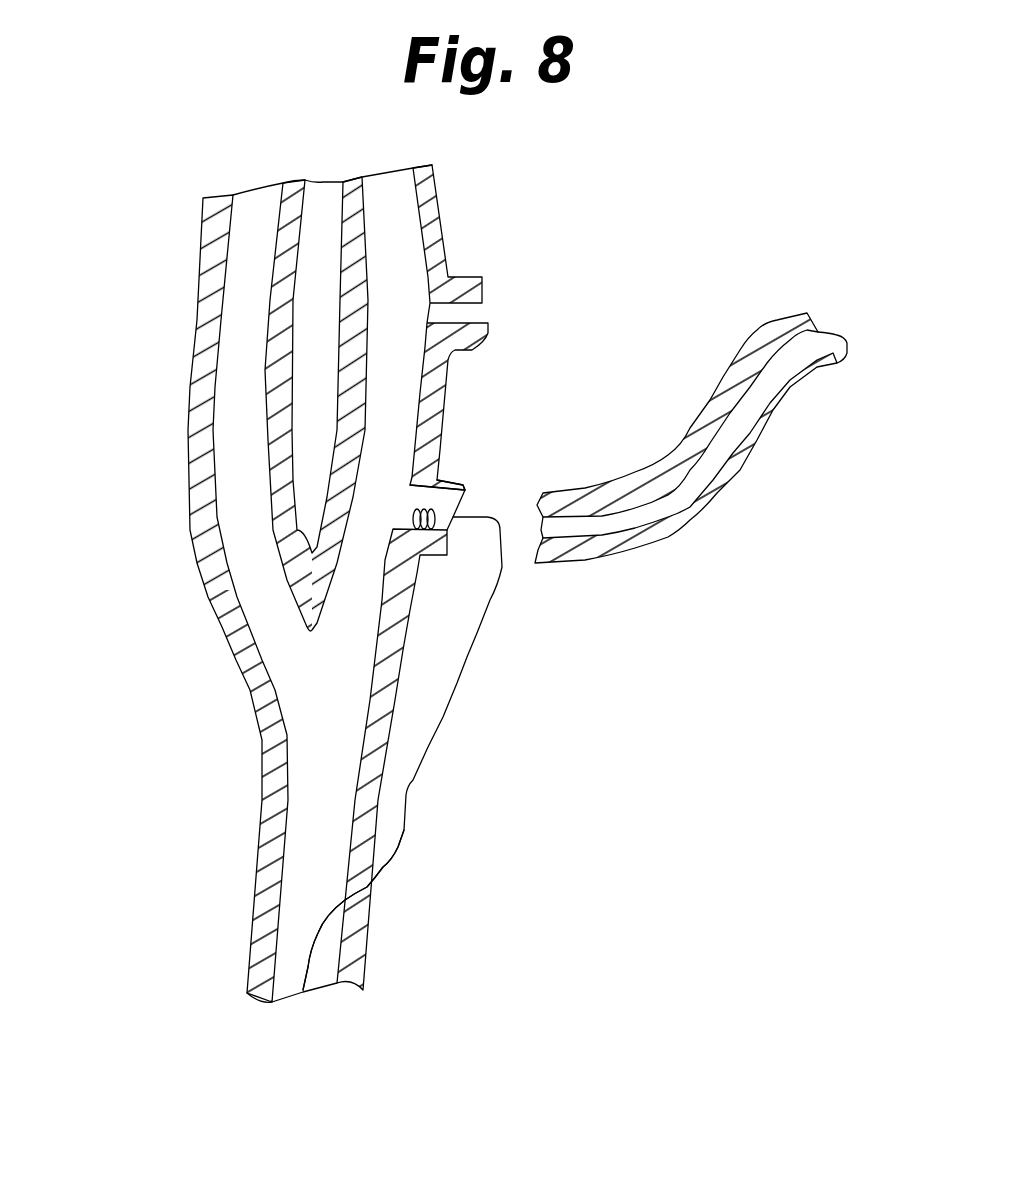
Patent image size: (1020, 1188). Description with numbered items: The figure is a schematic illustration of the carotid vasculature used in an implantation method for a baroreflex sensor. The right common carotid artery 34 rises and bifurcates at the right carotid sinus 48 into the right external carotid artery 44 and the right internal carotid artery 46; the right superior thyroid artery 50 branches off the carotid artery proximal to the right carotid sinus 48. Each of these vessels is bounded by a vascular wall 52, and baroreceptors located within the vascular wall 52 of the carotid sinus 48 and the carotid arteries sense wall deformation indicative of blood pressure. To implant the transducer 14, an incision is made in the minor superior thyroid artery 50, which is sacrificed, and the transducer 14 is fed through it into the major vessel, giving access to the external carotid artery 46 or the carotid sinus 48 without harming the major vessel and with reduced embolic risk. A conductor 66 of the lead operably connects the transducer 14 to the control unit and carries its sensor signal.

The transducer 14 is at (467, 488).
The right common carotid artery 34 is at (305, 905).
The right external carotid artery 44 is at (232, 335).
The right internal carotid artery 46 is at (400, 260).
The right carotid sinus 48 is at (297, 583).
The right superior thyroid artery 50 is at (822, 333).
The vascular wall 52 is at (440, 176).
The conductor 66 is at (472, 652).